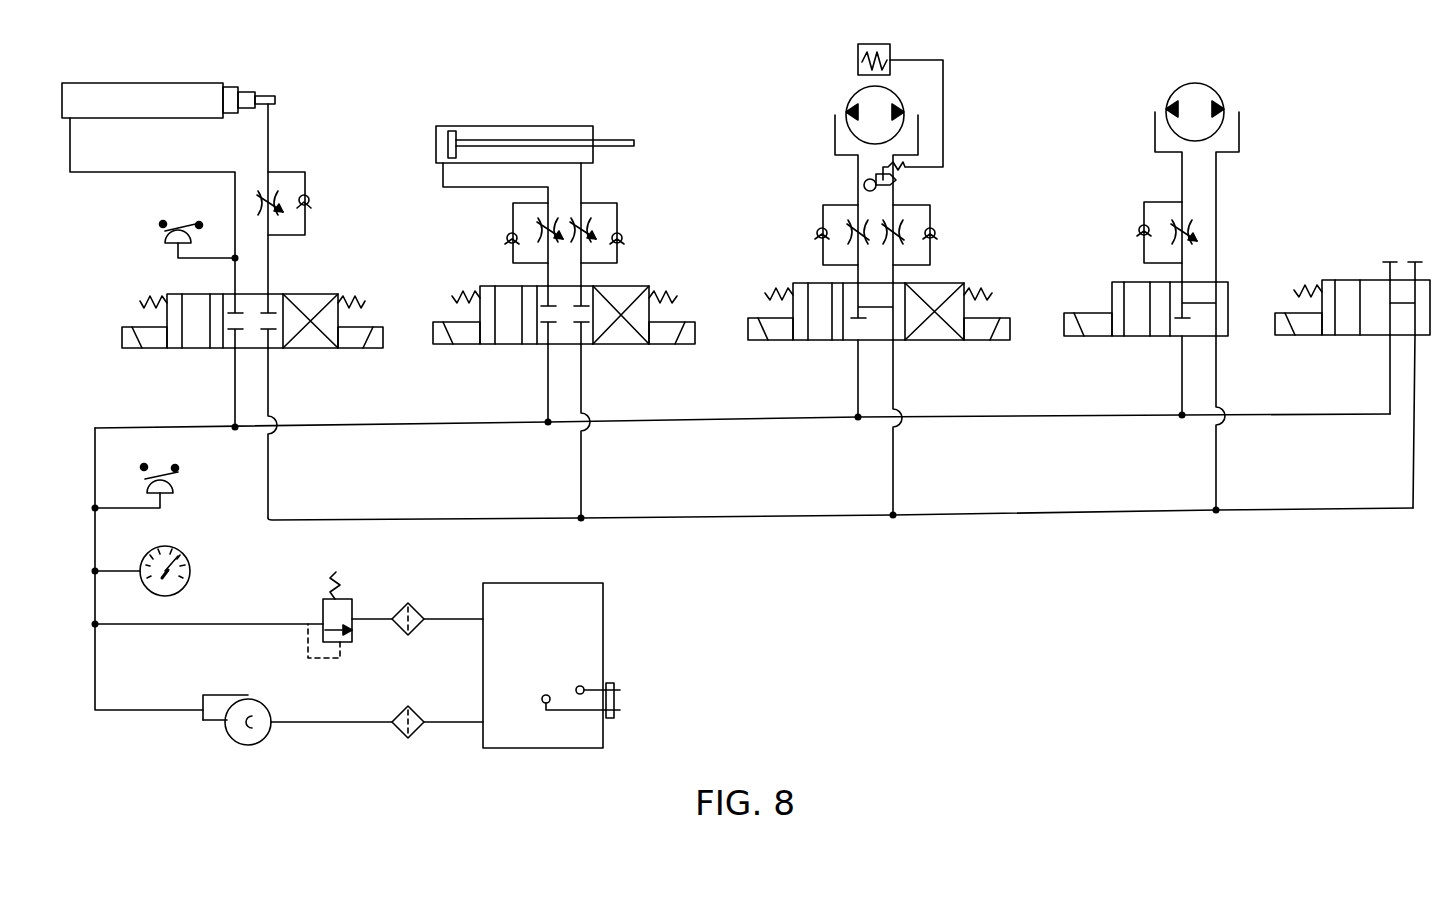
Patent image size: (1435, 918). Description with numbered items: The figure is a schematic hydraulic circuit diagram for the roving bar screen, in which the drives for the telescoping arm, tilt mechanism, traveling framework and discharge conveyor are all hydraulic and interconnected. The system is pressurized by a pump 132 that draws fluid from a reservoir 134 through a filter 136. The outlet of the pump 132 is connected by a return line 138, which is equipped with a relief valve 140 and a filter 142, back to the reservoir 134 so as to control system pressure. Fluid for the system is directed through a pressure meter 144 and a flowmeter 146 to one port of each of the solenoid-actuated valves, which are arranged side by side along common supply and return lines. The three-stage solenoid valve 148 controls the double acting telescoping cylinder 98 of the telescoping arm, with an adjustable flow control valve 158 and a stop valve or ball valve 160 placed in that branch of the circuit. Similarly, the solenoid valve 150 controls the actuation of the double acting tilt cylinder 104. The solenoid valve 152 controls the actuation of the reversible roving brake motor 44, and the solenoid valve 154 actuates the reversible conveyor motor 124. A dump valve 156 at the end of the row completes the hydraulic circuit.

The telescoping cylinder 98 is at (165, 93).
The tilt cylinder 104 is at (535, 128).
The roving brake motor 44 is at (863, 98).
The conveyor motor 124 is at (1215, 164).
The three-stage solenoid valve 148 is at (313, 349).
The solenoid valve 150 is at (628, 346).
The solenoid valve 152 is at (932, 342).
The solenoid valve 154 is at (1140, 340).
The dump valve 156 is at (1355, 338).
The adjustable flow control valve 158 is at (282, 183).
The ball valve 160 is at (310, 196).
The flowmeter 146 is at (173, 485).
The pressure meter 144 is at (185, 560).
The return line 138 is at (215, 623).
The relief valve 140 is at (345, 600).
The filter 142 is at (416, 612).
The reservoir 134 is at (597, 628).
The pump 132 is at (222, 718).
The filter 136 is at (395, 731).